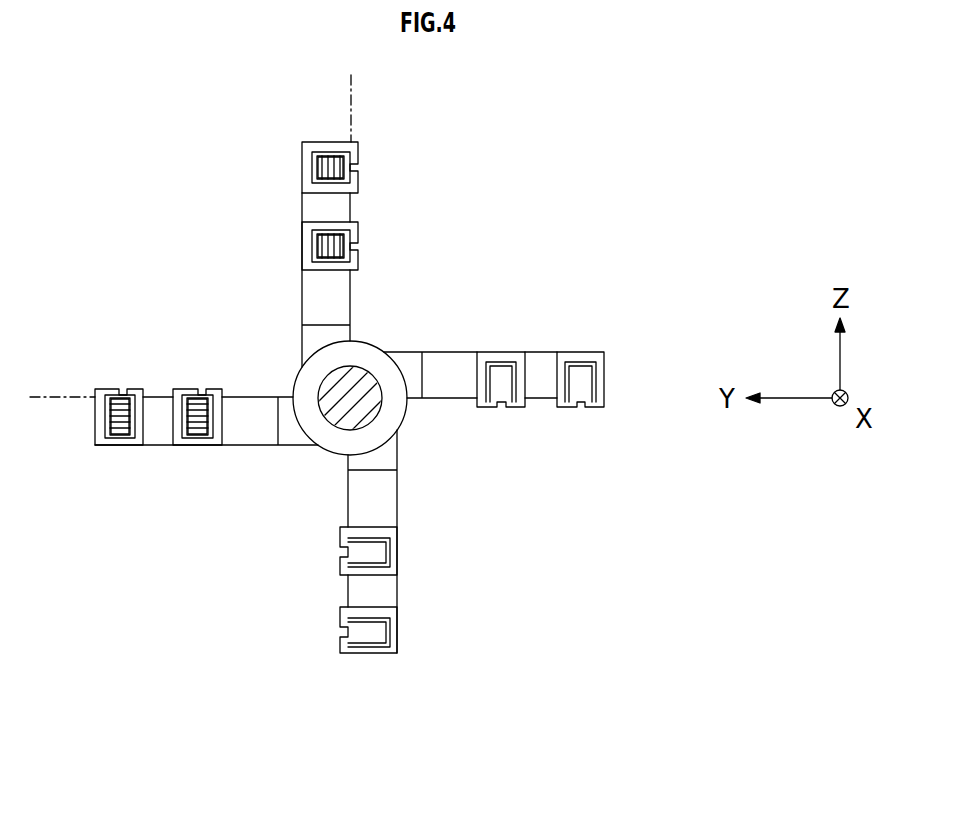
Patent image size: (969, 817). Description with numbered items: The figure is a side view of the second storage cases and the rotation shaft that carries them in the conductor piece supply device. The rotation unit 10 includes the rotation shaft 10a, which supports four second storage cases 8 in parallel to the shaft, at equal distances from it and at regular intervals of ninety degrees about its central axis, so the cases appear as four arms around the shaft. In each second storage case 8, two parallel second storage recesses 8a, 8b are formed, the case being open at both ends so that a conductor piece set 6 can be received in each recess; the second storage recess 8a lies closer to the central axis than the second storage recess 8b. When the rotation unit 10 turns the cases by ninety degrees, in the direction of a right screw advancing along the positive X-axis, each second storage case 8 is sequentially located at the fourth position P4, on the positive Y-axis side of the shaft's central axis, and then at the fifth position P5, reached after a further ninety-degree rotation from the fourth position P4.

The conductor piece set 6 is at (359, 167).
The second storage case 8 is at (230, 150).
The second storage recess 8a is at (301, 247).
The second storage recess 8b is at (301, 167).
The rotation unit 10 is at (409, 425).
The rotation shaft 10a is at (362, 372).
The fourth position P4 is at (58, 396).
The fifth position P5 is at (352, 113).